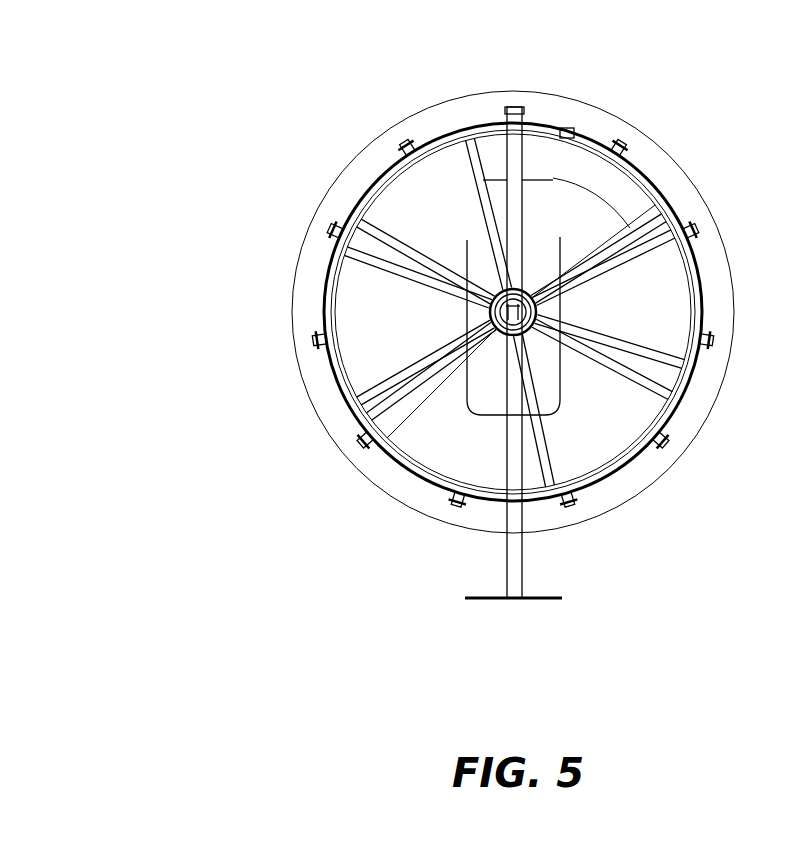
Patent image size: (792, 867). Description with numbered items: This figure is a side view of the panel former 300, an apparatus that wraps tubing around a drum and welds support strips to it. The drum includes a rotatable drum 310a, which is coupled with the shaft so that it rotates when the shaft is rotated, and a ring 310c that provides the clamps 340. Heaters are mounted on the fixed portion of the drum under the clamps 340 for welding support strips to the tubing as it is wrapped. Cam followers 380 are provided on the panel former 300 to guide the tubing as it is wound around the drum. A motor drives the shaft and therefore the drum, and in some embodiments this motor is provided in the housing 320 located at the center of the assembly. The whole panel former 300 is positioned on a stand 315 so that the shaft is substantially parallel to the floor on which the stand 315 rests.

The panel former 300 is at (192, 121).
The ring 310c is at (350, 182).
The rotatable drum 310a is at (318, 295).
The cam follower 380 is at (570, 123).
The clamps 340 is at (700, 343).
The housing 320 is at (478, 402).
The stand 315 is at (545, 617).